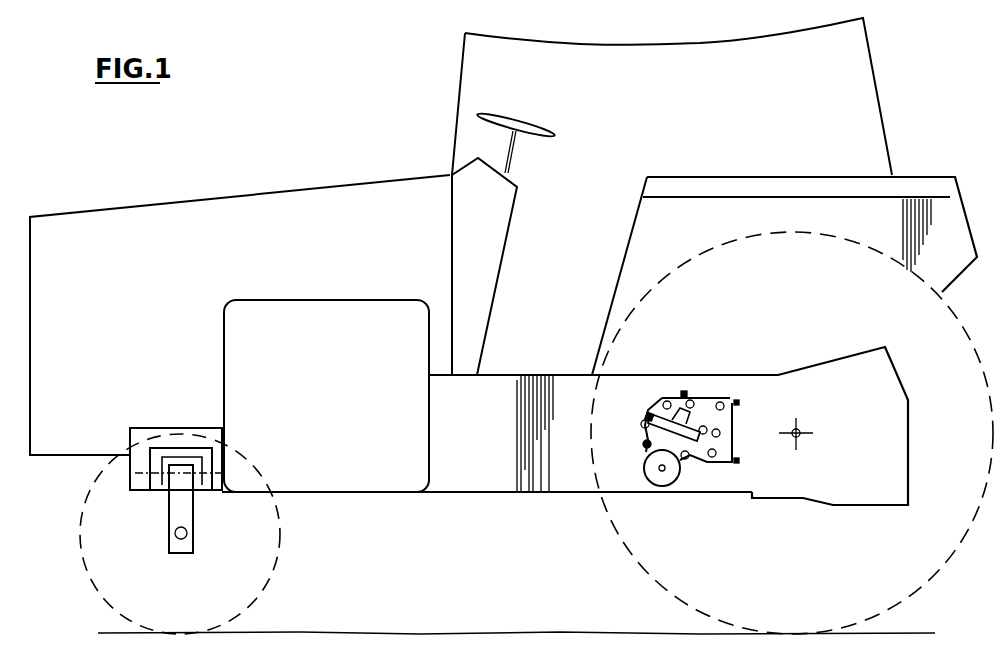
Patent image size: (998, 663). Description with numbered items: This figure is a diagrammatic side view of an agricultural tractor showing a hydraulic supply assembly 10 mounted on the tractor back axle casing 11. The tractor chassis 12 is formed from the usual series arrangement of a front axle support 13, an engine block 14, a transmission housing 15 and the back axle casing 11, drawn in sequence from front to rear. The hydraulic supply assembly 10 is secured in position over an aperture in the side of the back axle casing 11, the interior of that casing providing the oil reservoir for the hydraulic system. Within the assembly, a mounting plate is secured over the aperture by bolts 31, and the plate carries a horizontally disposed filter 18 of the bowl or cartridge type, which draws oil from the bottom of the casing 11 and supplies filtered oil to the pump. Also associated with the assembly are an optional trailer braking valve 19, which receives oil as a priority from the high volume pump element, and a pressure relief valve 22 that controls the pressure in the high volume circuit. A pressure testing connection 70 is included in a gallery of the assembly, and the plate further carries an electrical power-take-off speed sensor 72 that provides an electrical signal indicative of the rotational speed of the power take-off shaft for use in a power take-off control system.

The hydraulic supply assembly 10 is at (708, 400).
The back axle casing 11 is at (745, 485).
The tractor chassis 12 is at (392, 356).
The front axle support 13 is at (143, 430).
The engine block 14 is at (300, 384).
The transmission housing 15 is at (491, 480).
The filter 18 is at (656, 495).
The trailer braking valve 19 is at (676, 416).
The pressure relief valve 22 is at (686, 392).
The bolts 31 is at (643, 424).
The pressure testing connection 70 is at (733, 426).
The electrical power-take-off speed sensor 72 is at (735, 446).